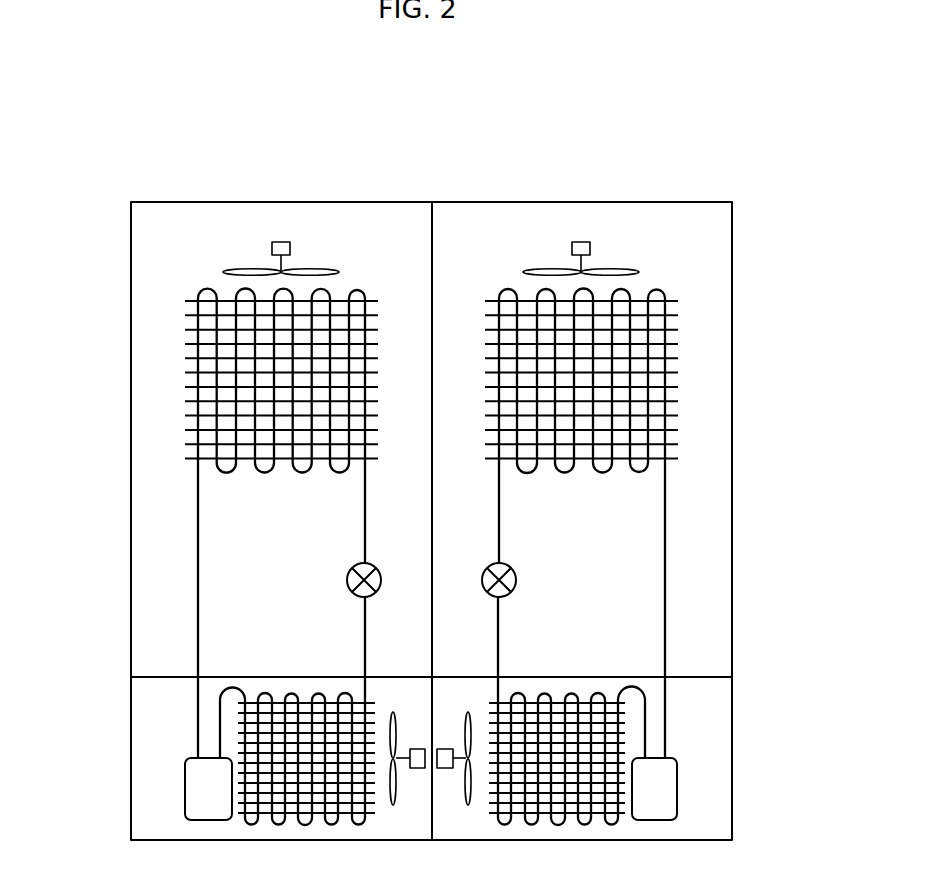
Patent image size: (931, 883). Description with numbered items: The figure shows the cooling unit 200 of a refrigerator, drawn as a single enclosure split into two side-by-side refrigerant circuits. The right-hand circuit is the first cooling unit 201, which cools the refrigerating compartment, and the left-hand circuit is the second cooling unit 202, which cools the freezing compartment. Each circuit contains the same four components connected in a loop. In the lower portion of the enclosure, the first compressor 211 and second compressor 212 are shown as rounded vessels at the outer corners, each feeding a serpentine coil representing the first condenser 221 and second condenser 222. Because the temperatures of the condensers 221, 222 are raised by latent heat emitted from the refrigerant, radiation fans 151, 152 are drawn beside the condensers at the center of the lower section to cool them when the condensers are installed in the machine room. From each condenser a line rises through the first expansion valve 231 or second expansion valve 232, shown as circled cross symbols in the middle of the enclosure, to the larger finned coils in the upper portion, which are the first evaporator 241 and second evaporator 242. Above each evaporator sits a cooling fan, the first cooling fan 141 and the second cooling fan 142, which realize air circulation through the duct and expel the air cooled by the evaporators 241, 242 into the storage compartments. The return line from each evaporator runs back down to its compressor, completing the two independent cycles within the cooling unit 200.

The cooling unit 200 is at (503, 85).
The first cooling unit 201 is at (671, 580).
The second cooling unit 202 is at (192, 578).
The first compressor 211 is at (657, 821).
The second compressor 212 is at (210, 821).
The first condenser 221 is at (582, 824).
The second condenser 222 is at (280, 824).
The first expansion valve 231 is at (516, 576).
The second expansion valve 232 is at (347, 575).
The first evaporator 241 is at (660, 287).
The second evaporator 242 is at (207, 288).
The first cooling fan 141 is at (610, 268).
The second cooling fan 142 is at (310, 268).
The radiation fan 151 is at (468, 716).
The radiation fan 152 is at (393, 716).